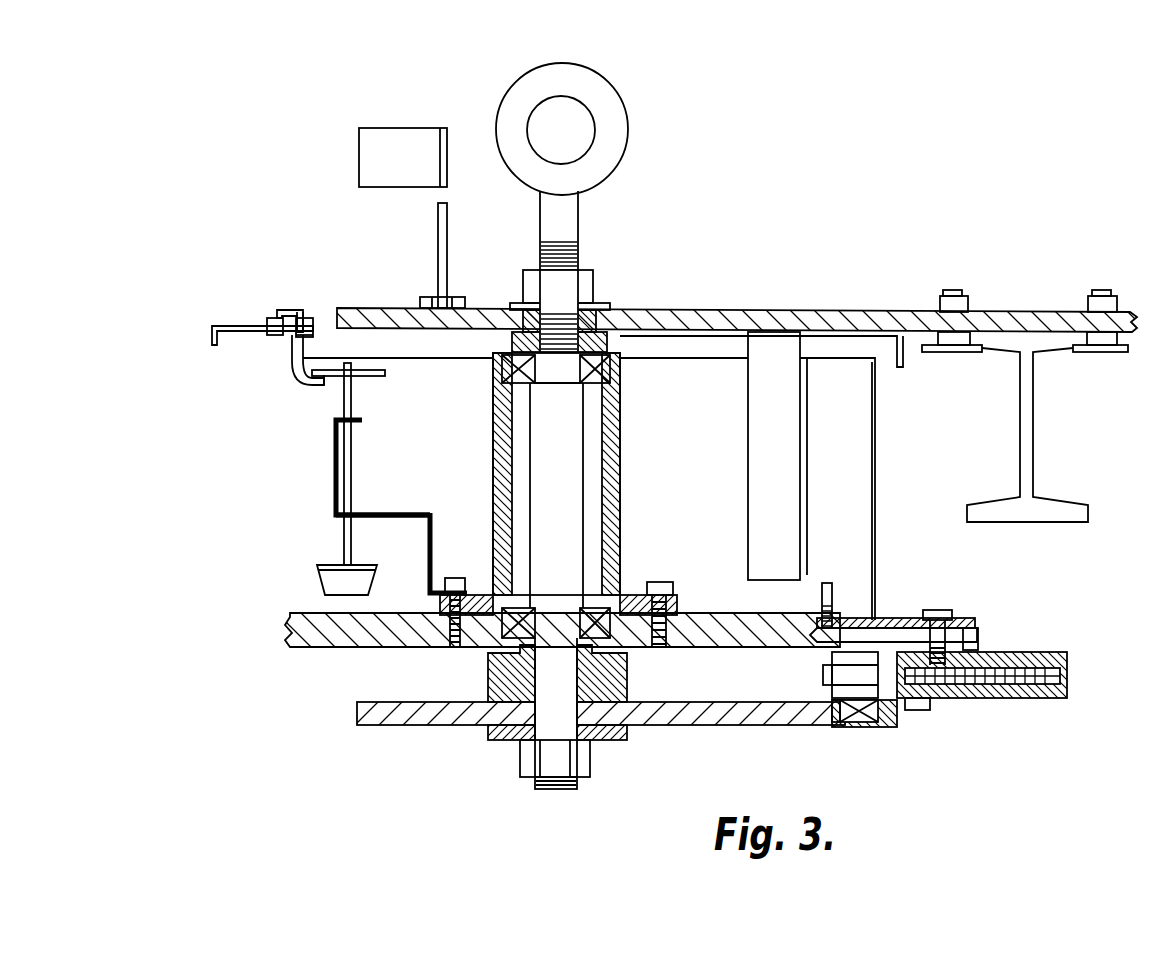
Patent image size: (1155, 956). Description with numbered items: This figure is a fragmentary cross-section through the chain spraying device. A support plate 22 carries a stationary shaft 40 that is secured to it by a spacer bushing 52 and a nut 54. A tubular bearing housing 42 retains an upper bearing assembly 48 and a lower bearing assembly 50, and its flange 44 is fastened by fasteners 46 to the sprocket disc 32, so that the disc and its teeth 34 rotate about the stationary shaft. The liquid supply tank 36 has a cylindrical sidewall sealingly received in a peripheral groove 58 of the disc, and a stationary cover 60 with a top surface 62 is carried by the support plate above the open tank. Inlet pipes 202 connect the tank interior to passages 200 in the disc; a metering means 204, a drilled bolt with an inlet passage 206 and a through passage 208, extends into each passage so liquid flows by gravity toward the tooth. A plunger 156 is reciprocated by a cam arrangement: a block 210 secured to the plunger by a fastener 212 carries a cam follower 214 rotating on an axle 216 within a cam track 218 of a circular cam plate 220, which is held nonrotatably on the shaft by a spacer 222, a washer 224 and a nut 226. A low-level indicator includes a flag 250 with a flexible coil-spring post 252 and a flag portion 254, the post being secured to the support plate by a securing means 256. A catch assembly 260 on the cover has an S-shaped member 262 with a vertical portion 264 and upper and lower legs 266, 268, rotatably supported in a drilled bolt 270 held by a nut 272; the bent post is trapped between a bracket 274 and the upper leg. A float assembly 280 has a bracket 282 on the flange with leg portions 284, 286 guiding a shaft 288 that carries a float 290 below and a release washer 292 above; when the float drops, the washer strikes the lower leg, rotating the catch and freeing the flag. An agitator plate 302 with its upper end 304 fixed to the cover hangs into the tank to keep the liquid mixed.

The support plate 22 is at (830, 316).
The sprocket disc 32 is at (722, 618).
The teeth 34 is at (1072, 636).
The liquid supply tank 36 is at (880, 498).
The shaft 40 is at (578, 212).
The bearing housing 42 is at (612, 422).
The flange 44 is at (630, 600).
The fasteners 46 is at (454, 578).
The upper bearing assembly 48 is at (600, 350).
The lower bearing assembly 50 is at (515, 612).
The spacer bushing 52 is at (533, 325).
The nut 54 is at (586, 282).
The peripheral groove 58 is at (898, 632).
The stationary cover 60 is at (872, 318).
The top surface 62 is at (214, 324).
The plunger 156 is at (962, 686).
The passages 200 is at (872, 620).
The inlet pipes 202 is at (835, 590).
The metering means 204 is at (955, 612).
The inlet passage 206 is at (978, 635).
The through passage 208 is at (985, 650).
The block 210 is at (838, 656).
The fastener 212 is at (822, 688).
The cam follower 214 is at (868, 722).
The axle 216 is at (838, 714).
The cam track 218 is at (888, 728).
The cam plate 220 is at (655, 712).
The spacer 222 is at (488, 672).
The washer 224 is at (490, 738).
The nut 226 is at (520, 765).
The flag 250 is at (450, 112).
The flexible post 252 is at (448, 212).
The flag portion 254 is at (395, 135).
The securing means 256 is at (450, 300).
The catch assembly 260 is at (296, 306).
The S-shaped member 262 is at (312, 306).
The vertical portion 264 is at (292, 357).
The upper leg 266 is at (278, 308).
The lower leg 268 is at (320, 390).
The drilled bolt 270 is at (280, 338).
The nut 272 is at (306, 337).
The bracket 274 is at (268, 325).
The float assembly 280 is at (378, 450).
The bracket 282 is at (334, 482).
The upper leg portion 284 is at (352, 425).
The lower leg portion 286 is at (398, 515).
The shaft 288 is at (350, 493).
The float 290 is at (317, 578).
The release washer 292 is at (385, 372).
The agitator plate 302 is at (808, 472).
The upper end 304 is at (722, 316).